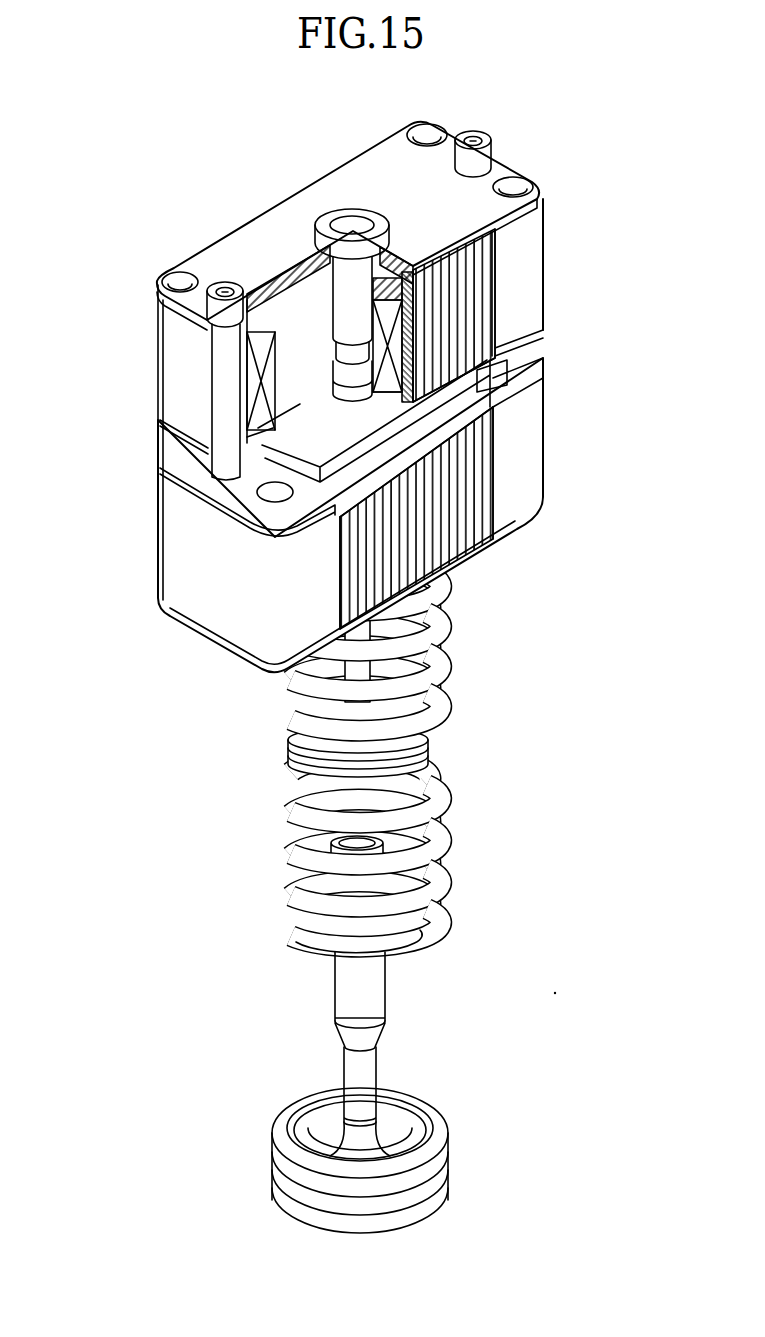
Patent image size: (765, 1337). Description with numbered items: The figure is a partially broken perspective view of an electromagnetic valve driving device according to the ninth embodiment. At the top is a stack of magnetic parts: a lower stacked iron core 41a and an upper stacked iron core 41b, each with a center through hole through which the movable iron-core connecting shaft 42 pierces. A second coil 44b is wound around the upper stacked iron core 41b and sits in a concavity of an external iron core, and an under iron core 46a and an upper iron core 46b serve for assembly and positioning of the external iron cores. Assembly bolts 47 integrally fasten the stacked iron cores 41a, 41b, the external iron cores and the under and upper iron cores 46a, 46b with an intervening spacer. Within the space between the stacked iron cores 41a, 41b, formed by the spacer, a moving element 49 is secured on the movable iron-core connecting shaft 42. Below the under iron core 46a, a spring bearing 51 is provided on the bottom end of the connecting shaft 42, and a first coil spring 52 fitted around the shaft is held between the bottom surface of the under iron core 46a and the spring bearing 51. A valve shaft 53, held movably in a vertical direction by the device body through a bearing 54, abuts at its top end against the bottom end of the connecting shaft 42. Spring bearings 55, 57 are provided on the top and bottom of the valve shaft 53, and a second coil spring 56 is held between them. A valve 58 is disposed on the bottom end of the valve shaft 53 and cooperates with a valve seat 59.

The stacked iron core 41a is at (458, 530).
The stacked iron core 41b is at (473, 298).
The movable iron-core connecting shaft 42 is at (300, 316).
The second coil 44b is at (250, 387).
The under iron core 46a is at (185, 622).
The upper iron core 46b is at (267, 237).
The assembly bolt 47 is at (474, 133).
The moving element 49 is at (503, 383).
The spring bearing 51 is at (420, 758).
The first coil spring 52 is at (423, 684).
The valve shaft 53 is at (370, 1072).
The bearing 54 is at (383, 995).
The spring bearing 55 is at (396, 797).
The second coil spring 56 is at (425, 865).
The spring bearing 57 is at (398, 947).
The valve 58 is at (360, 1236).
The valve seat 59 is at (437, 1145).